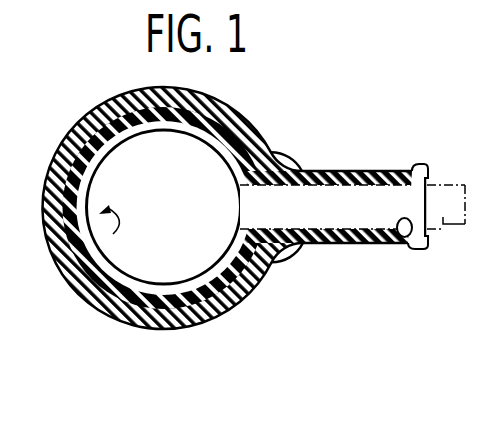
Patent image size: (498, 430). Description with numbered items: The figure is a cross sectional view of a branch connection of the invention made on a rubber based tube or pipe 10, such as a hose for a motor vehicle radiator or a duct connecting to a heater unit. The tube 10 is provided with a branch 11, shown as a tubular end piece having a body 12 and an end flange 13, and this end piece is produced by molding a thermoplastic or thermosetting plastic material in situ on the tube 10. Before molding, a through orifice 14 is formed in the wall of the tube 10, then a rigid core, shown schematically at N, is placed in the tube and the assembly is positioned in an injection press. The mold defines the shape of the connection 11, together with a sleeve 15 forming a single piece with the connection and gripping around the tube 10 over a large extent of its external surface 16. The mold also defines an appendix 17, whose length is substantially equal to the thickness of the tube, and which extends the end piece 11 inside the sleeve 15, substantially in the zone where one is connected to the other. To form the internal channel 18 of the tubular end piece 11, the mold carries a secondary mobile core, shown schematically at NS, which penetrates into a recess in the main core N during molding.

The tube or pipe 10 is at (217, 273).
The branch 11 is at (345, 157).
The body 12 is at (368, 243).
The end flange 13 is at (418, 164).
The through orifice 14 is at (277, 251).
The sleeve 15 is at (170, 315).
The external surface 16 is at (124, 293).
The appendix 17 is at (271, 155).
The internal channel 18 is at (410, 242).
The rigid core N is at (68, 268).
The secondary mobile core NS is at (353, 227).